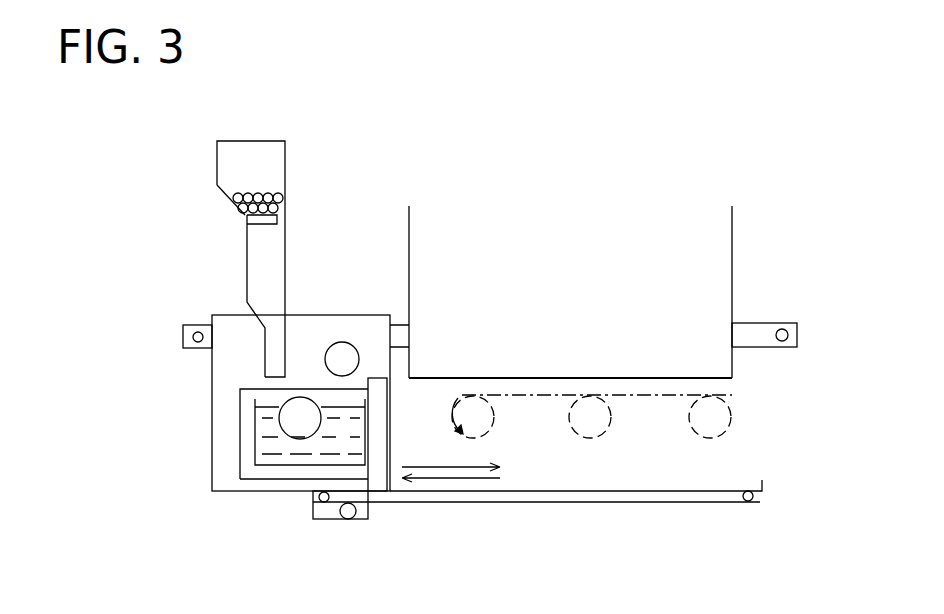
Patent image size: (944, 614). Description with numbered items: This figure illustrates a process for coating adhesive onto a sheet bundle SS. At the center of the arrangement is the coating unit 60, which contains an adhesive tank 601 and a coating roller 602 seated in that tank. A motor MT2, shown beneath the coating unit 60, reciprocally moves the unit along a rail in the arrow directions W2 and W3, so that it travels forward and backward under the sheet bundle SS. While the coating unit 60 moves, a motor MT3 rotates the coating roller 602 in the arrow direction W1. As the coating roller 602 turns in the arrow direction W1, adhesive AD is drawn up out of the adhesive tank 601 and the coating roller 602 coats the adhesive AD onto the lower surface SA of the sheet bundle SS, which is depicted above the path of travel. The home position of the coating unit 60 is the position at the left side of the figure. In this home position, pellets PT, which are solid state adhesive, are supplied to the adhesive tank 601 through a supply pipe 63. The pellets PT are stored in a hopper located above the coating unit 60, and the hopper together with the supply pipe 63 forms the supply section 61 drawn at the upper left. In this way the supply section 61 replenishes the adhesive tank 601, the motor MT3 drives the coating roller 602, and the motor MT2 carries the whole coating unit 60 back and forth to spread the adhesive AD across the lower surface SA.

The coating unit 60 is at (248, 408).
The supply section 61 is at (217, 165).
The pellets PT is at (248, 195).
The supply pipe 63 is at (262, 353).
The motor MT3 is at (347, 341).
The adhesive tank 601 is at (253, 460).
The coating roller 602 is at (278, 422).
The adhesive AD is at (287, 460).
The motor MT2 is at (348, 520).
The sheet bundle SS is at (732, 245).
The lower surface SA is at (535, 378).
The arrow direction W1 is at (458, 398).
The arrow direction W2 is at (443, 465).
The arrow direction W3 is at (448, 479).